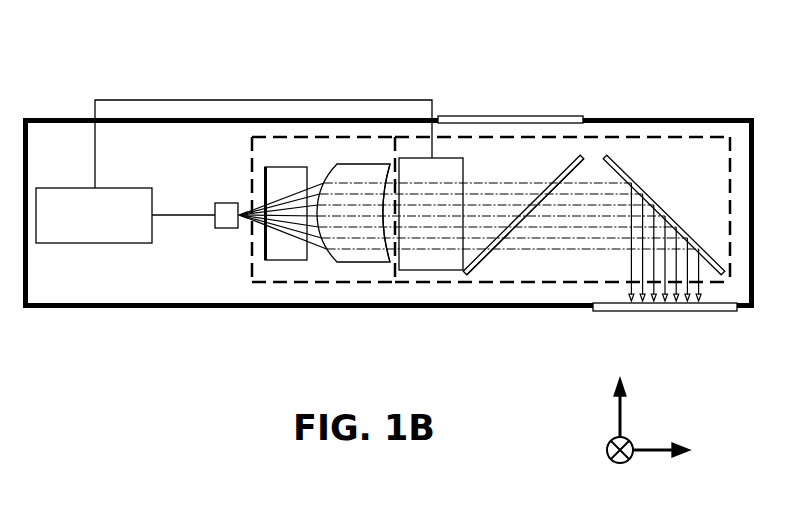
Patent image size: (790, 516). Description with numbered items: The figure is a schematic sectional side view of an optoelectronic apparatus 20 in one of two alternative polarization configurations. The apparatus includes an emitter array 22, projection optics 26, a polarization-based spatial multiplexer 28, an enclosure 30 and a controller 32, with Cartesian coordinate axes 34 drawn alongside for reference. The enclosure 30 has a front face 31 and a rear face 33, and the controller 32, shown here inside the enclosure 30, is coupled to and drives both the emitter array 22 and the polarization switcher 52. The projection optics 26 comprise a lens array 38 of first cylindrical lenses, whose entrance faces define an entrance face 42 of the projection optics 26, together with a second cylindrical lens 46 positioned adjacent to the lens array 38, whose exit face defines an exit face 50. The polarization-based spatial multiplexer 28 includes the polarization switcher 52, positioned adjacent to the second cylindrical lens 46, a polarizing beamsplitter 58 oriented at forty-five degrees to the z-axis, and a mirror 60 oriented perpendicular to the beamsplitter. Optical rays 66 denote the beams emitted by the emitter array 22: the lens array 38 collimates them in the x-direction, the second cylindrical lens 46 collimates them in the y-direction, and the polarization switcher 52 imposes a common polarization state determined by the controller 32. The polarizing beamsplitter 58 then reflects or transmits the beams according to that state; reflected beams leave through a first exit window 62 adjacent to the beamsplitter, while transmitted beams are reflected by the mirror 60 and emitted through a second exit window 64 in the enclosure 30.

The optoelectronic apparatus 20 is at (147, 67).
The emitter array 22 is at (226, 212).
The projection optics 26 is at (302, 283).
The polarization-based spatial multiplexer 28 is at (432, 283).
The enclosure 30 is at (133, 283).
The front face 31 is at (721, 123).
The controller 32 is at (68, 245).
The rear face 33 is at (475, 304).
The Cartesian coordinate axes 34 is at (650, 452).
The lens array 38 is at (280, 262).
The entrance face 42 is at (266, 176).
The second cylindrical lens 46 is at (364, 262).
The exit face 50 is at (385, 213).
The polarization switcher 52 is at (437, 170).
The polarizing beamsplitter 58 is at (533, 213).
The mirror 60 is at (652, 200).
The first exit window 62 is at (500, 117).
The second exit window 64 is at (705, 311).
The optical rays 66 is at (573, 203).